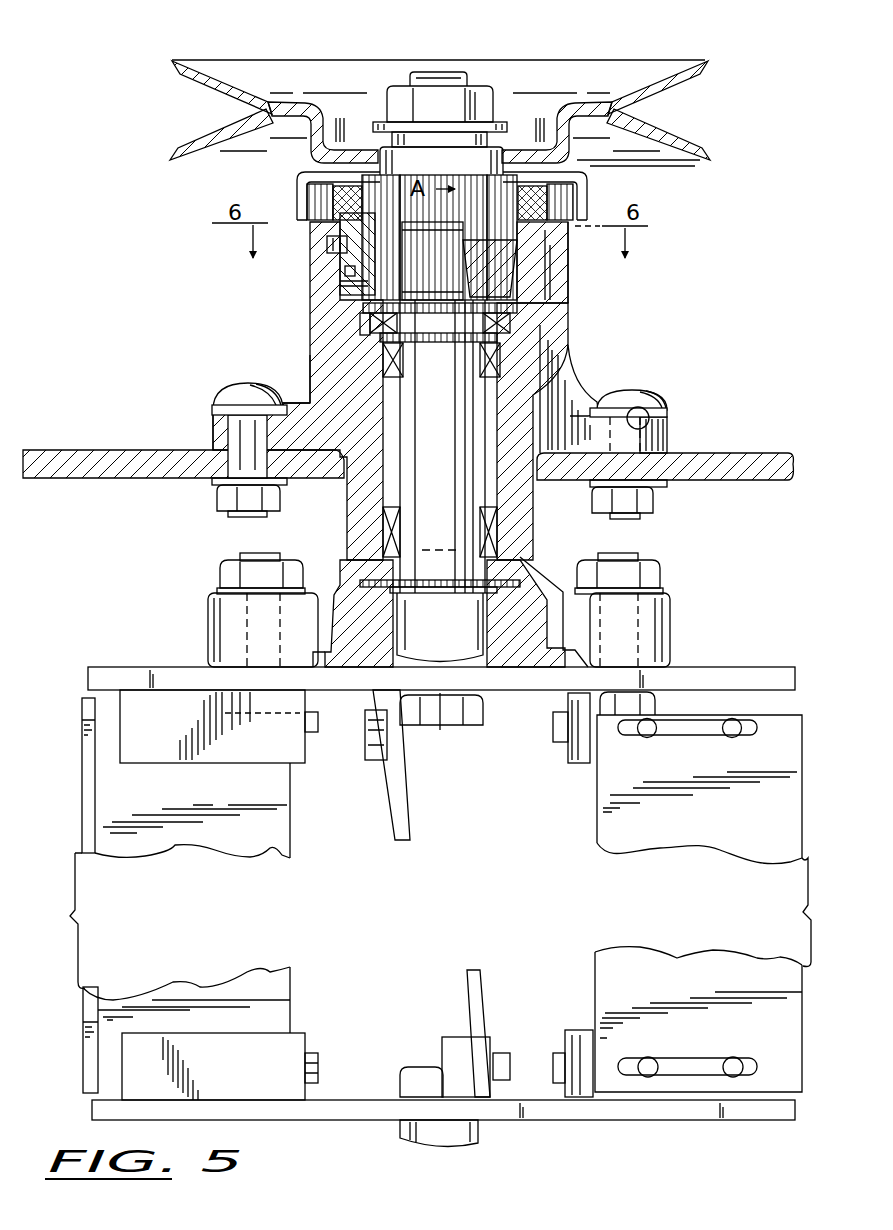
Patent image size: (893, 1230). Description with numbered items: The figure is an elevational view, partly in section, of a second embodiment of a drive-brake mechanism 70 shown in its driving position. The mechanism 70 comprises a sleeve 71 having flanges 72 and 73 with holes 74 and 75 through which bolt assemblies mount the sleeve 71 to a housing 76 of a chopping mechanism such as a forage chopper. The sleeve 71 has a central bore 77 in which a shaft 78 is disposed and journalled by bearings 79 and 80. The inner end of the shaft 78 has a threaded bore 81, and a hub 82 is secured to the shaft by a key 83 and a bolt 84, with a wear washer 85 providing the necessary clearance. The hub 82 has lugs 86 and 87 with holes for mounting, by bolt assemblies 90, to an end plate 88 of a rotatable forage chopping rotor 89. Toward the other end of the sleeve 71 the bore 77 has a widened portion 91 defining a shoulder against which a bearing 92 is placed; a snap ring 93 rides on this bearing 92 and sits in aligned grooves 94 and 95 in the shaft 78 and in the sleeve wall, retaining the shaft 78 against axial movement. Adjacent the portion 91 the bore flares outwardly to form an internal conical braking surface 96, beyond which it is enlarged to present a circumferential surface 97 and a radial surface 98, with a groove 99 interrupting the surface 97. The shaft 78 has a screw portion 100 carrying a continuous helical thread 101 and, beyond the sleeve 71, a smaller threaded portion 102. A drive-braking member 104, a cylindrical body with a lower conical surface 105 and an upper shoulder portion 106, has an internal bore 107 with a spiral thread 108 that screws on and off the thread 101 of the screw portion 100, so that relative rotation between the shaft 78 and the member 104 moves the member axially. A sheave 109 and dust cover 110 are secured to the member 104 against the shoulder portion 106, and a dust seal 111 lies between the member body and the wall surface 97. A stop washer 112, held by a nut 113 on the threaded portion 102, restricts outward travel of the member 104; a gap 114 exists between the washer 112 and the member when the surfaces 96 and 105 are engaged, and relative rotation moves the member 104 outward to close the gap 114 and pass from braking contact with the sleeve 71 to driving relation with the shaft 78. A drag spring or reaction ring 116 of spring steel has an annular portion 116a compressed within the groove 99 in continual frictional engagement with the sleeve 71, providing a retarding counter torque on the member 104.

The drive-brake mechanism 70 is at (557, 318).
The sleeve 71 is at (560, 366).
The flange 72 is at (668, 431).
The flange 73 is at (217, 433).
The hole 74 is at (648, 392).
The hole 75 is at (243, 406).
The housing 76 is at (80, 457).
The central bore 77 is at (383, 408).
The shaft 78 is at (460, 425).
The bearing 79 is at (508, 390).
The bearing 80 is at (497, 527).
The threaded bore 81 is at (501, 566).
The hub 82 is at (553, 604).
The key 83 is at (486, 636).
The bolt 84 is at (447, 722).
The wear washer 85 is at (385, 600).
The lug 86 is at (665, 636).
The lug 87 is at (217, 636).
The end plate 88 is at (747, 672).
The forage chopping rotor 89 is at (772, 762).
The bolt assemblies 90 is at (240, 578).
The widened portion 91 is at (372, 329).
The bearing 92 is at (367, 318).
The snap ring 93 is at (547, 312).
The groove 94 is at (308, 390).
The groove 95 is at (365, 308).
The internal conical braking surface 96 is at (478, 214).
The circumferential surface 97 is at (372, 216).
The radial surface 98 is at (490, 313).
The groove 99 is at (345, 245).
The screw portion 100 is at (403, 310).
The helical land or thread 101 is at (410, 342).
The threaded portion 102 is at (450, 72).
The drive-braking member 104 is at (490, 212).
The lower conical surface 105 is at (365, 280).
The upper shoulder portion 106 is at (357, 158).
The internal bore 107 is at (375, 279).
The spiral groove or thread 108 is at (300, 240).
The sheave 109 is at (704, 78).
The dust cover 110 is at (589, 189).
The dust seal 111 is at (560, 258).
The stop washer 112 is at (495, 137).
The nut 113 is at (489, 86).
The gap 114 is at (478, 207).
The drag spring or reaction ring 116 is at (566, 264).
The annular portion 116a is at (345, 273).